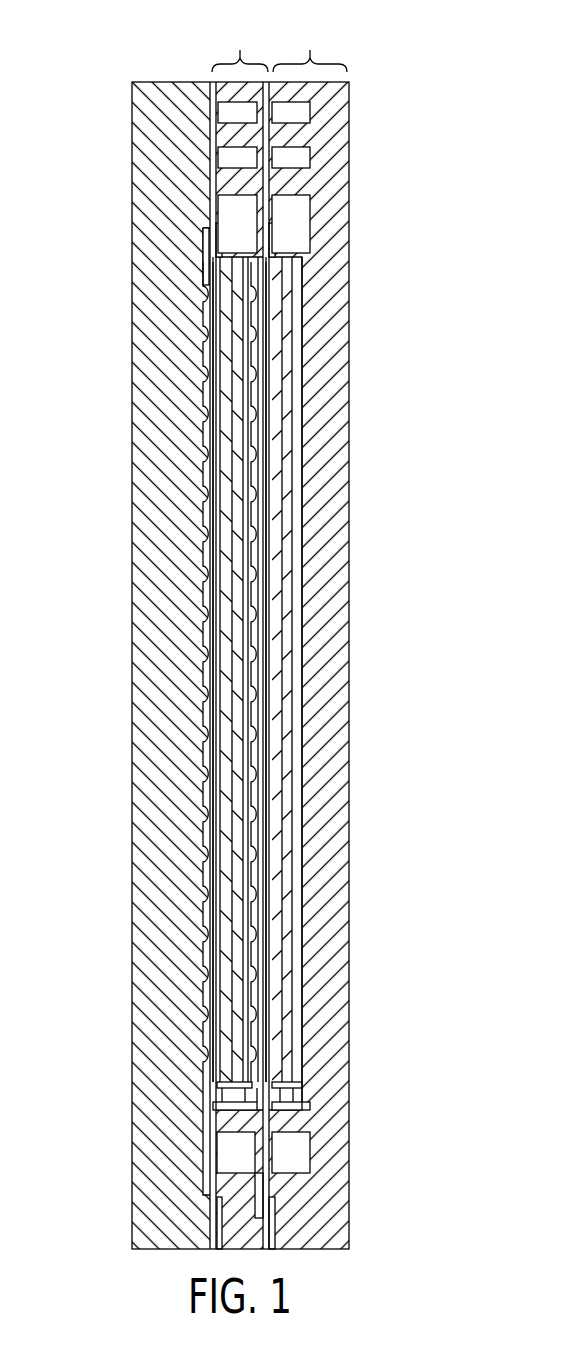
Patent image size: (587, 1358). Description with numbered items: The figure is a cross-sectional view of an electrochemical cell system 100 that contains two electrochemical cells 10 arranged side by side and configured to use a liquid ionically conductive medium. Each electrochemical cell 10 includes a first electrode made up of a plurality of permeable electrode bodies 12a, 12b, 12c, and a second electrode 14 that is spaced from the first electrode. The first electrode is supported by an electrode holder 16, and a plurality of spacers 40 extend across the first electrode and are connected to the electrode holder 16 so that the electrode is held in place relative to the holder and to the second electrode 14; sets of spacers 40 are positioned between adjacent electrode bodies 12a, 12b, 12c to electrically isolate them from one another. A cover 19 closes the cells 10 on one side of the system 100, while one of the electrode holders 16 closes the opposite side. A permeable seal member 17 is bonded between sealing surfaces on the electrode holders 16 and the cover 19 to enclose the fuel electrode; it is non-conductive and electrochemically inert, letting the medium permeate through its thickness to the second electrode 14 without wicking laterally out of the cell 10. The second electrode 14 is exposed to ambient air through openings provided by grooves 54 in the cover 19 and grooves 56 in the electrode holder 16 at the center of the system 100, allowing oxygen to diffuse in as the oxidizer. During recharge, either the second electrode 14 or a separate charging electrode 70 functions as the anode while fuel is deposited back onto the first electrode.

The electrochemical cell system 100 is at (96, 58).
The electrochemical cell 10 is at (279, 553).
The permeable electrode body 12a is at (245, 970).
The permeable electrode body 12b is at (238, 872).
The permeable electrode body 12c is at (223, 803).
The second electrode 14 is at (205, 340).
The electrode holder 16 is at (342, 204).
The permeable seal member 17 is at (218, 112).
The cover 19 is at (204, 232).
The spacer 40 is at (222, 515).
The groove 54 is at (204, 380).
The groove 56 is at (250, 466).
The charging electrode 70 is at (215, 988).